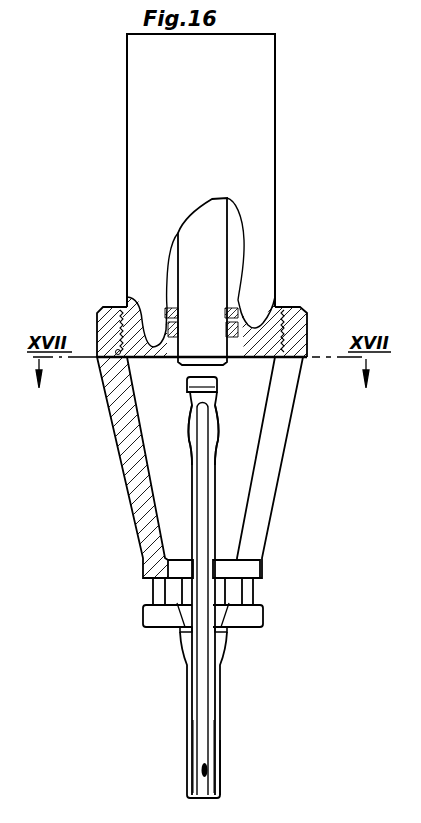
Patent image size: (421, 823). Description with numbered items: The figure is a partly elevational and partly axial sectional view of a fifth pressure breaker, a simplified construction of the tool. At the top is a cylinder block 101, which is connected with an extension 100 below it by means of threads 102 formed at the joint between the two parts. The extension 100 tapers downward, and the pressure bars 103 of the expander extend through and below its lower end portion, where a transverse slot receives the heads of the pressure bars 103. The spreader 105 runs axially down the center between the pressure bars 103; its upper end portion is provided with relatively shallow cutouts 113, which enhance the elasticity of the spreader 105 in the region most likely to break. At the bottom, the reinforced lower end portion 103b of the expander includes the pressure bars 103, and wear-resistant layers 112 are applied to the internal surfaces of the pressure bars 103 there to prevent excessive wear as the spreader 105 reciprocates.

The extension 100 is at (128, 478).
The cylinder block 101 is at (265, 128).
The threads 102 is at (298, 319).
The pressure bars 103 is at (193, 700).
The reinforced lower end portion 103b is at (220, 762).
The spreader 105 is at (202, 517).
The wear-resistant layers 112 is at (207, 772).
The cutouts 113 is at (212, 412).